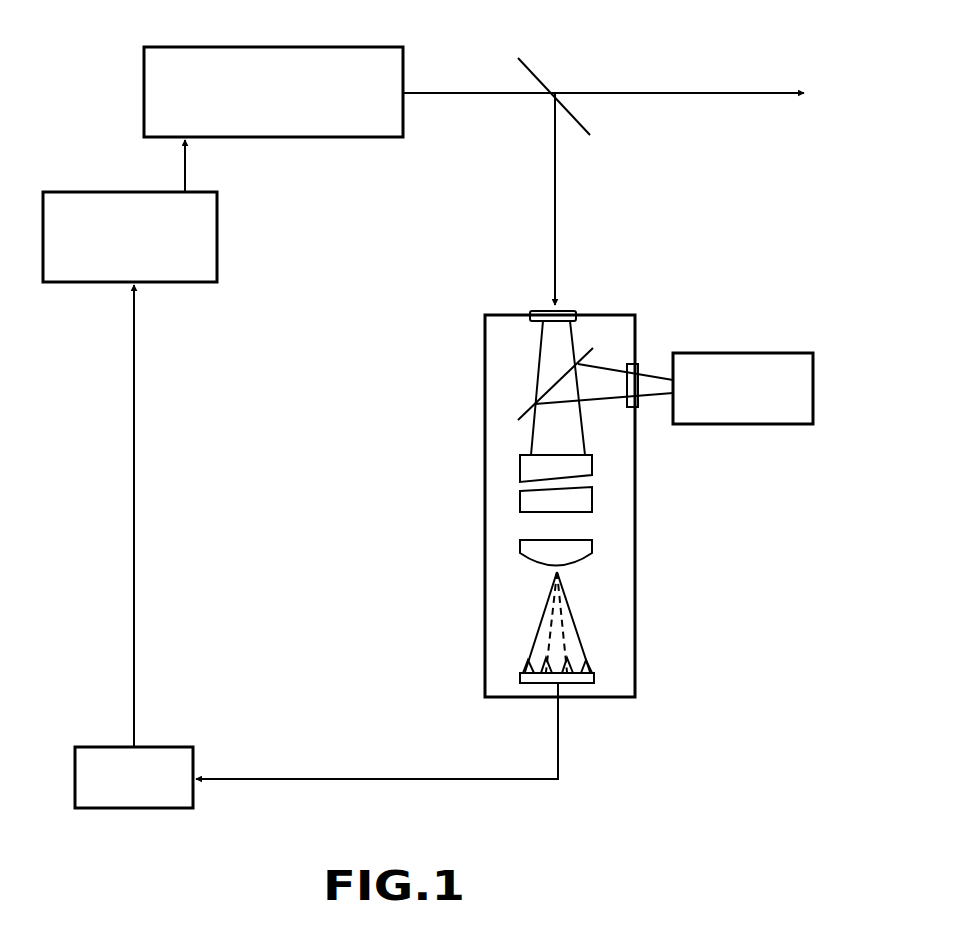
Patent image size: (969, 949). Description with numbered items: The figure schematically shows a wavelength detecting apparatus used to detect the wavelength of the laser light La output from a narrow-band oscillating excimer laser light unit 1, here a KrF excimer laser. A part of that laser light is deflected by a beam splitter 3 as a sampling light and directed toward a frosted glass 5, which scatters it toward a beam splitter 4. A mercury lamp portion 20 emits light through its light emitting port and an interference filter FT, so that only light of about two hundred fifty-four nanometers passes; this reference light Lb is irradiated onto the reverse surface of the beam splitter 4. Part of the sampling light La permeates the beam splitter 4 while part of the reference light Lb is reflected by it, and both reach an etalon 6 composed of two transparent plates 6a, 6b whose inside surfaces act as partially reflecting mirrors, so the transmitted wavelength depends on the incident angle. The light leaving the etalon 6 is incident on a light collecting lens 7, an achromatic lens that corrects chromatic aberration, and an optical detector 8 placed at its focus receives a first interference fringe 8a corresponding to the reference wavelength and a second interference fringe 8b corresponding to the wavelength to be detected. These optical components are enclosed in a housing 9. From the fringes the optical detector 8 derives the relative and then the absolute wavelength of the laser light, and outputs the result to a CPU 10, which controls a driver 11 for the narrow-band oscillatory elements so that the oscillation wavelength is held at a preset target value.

The narrow-band oscillating excimer laser light unit 1 is at (232, 47).
The beam splitter 3 is at (535, 72).
The beam splitter 4 is at (528, 400).
The frosted glass 5 is at (562, 311).
The etalon 6 is at (550, 477).
The transparent plate 6a is at (520, 462).
The transparent plate 6b is at (520, 500).
The light collecting lens 7 is at (592, 548).
The optical detector 8 is at (563, 659).
The first interference fringe 8a is at (546, 660).
The second interference fringe 8b is at (528, 663).
The housing 9 is at (613, 315).
The central processing unit 10 is at (168, 747).
The driver 11 is at (188, 282).
The mercury lamp portion 20 is at (752, 353).
The laser light La is at (430, 93).
The reference light Lb is at (647, 373).
The interference filter FT is at (637, 408).